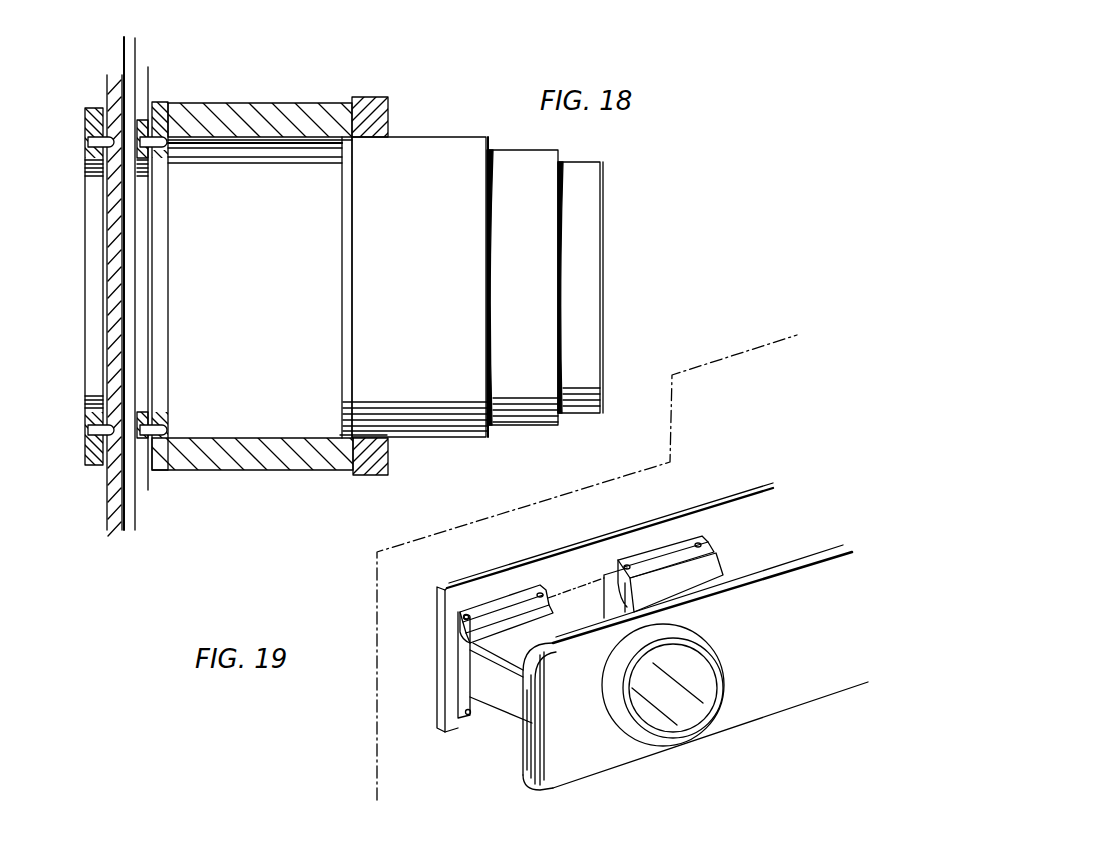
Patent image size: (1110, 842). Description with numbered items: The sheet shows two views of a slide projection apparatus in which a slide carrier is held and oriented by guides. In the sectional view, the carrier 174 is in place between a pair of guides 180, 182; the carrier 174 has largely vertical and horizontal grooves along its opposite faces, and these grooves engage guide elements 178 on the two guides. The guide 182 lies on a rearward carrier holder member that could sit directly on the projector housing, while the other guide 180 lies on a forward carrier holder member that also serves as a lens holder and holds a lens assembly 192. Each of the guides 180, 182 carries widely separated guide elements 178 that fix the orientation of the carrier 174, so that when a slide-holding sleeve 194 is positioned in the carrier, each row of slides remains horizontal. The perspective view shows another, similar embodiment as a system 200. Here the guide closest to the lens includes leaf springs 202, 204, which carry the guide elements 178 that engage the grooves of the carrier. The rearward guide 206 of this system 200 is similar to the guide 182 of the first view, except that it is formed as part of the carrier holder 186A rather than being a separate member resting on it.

In FIG. 19, the carrier 174 is at (728, 356).
In FIG. 18, the guide elements 178 is at (88, 143).
In FIG. 19, the guide elements 178 is at (462, 612).
In FIG. 18, the guide 180 is at (153, 108).
In FIG. 18, the guide 182 is at (94, 108).
In FIG. 19, the carrier holder 186A is at (745, 492).
In FIG. 18, the lens assembly 192 is at (444, 145).
In FIG. 18, the slide-holding sleeve 194 is at (124, 50).
In FIG. 19, the system 200 is at (776, 470).
In FIG. 19, the leaf spring 202 is at (520, 605).
In FIG. 19, the leaf spring 204 is at (707, 551).
In FIG. 19, the rearward guide 206 is at (445, 732).